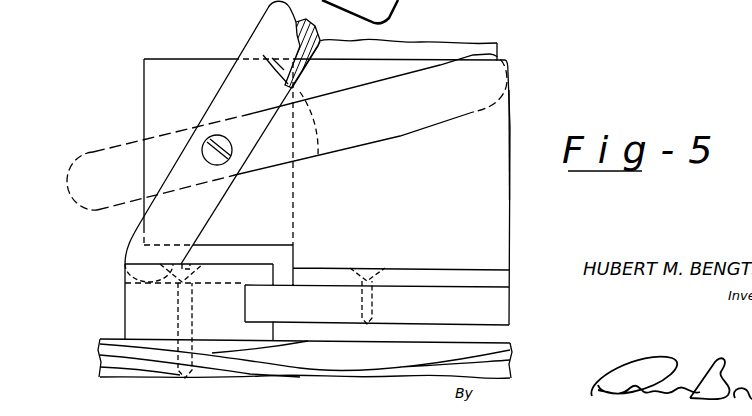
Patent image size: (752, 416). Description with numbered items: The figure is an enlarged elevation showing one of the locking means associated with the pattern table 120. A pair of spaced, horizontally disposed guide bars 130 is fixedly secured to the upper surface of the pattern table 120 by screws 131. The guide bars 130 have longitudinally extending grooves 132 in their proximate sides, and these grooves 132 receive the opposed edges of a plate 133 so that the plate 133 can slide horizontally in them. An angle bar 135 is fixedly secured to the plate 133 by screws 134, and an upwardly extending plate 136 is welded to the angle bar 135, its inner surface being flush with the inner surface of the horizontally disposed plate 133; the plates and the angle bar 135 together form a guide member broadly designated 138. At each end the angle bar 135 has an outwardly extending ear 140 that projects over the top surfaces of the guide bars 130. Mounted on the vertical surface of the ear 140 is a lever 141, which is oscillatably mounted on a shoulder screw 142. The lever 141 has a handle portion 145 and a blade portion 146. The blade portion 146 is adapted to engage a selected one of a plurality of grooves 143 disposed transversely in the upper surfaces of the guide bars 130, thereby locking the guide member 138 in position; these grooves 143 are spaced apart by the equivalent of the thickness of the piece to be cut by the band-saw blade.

The pattern table 120 is at (100, 365).
The guide bars 130 is at (124, 305).
The screws 131 is at (193, 322).
The grooves 132 is at (242, 312).
The plate 133 is at (313, 318).
The screws 134 is at (373, 300).
The angle bar 135 is at (509, 215).
The upwardly extending plate 136 is at (498, 48).
The guide member 138 is at (509, 124).
The ear 140 is at (169, 60).
The lever 141 is at (216, 90).
The shoulder screw 142 is at (237, 134).
The grooves 143 is at (123, 267).
The handle portion 145 is at (253, 27).
The blade portion 146 is at (97, 152).